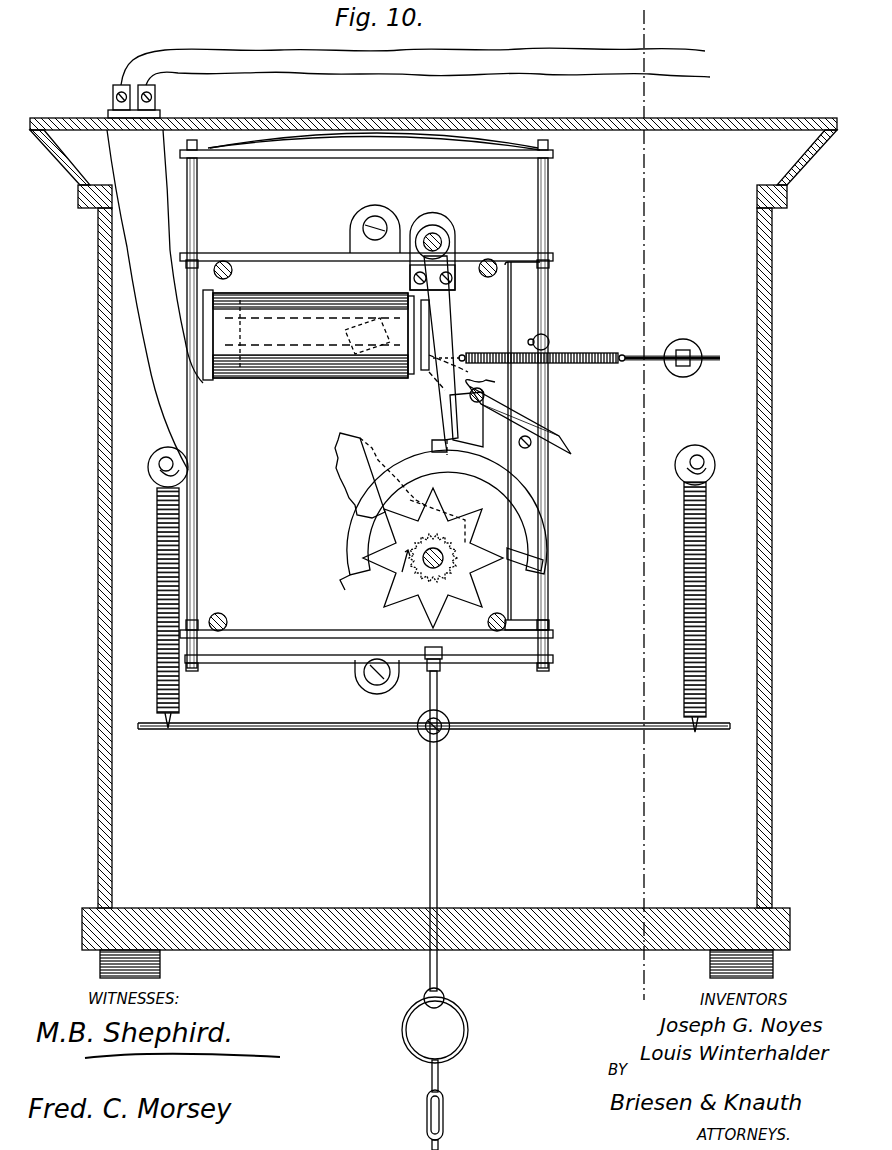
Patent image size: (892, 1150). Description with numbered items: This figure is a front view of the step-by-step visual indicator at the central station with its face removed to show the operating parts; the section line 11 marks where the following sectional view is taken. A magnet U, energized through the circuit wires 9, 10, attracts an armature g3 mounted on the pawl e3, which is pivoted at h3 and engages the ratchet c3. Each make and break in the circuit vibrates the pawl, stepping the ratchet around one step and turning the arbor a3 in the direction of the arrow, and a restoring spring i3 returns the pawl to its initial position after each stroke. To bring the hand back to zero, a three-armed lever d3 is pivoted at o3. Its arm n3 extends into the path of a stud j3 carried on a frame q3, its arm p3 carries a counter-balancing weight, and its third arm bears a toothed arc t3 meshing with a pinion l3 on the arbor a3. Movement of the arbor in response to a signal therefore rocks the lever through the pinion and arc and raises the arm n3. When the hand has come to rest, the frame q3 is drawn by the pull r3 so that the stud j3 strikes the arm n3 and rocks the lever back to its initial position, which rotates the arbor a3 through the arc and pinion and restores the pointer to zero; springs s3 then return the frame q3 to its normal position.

The circuit wire 9 is at (141, 190).
The circuit wire 10 is at (406, 259).
The section line 11 is at (659, 505).
The magnet U is at (308, 335).
The frame q3 is at (200, 455).
The arm p3 is at (425, 372).
The pivot h3 is at (442, 240).
The armature g3 is at (432, 328).
The restoring spring i3 is at (578, 352).
The stud j3 is at (547, 336).
The arm n3 is at (563, 443).
The three-armed lever d3 is at (505, 407).
The pivot o3 is at (480, 402).
The pawl e3 is at (432, 452).
The toothed arc t3 is at (348, 490).
The arbor a3 is at (433, 580).
The ratchet c3 is at (462, 552).
The pinion l3 is at (443, 562).
The springs s3 is at (160, 622).
The pull r3 is at (438, 834).